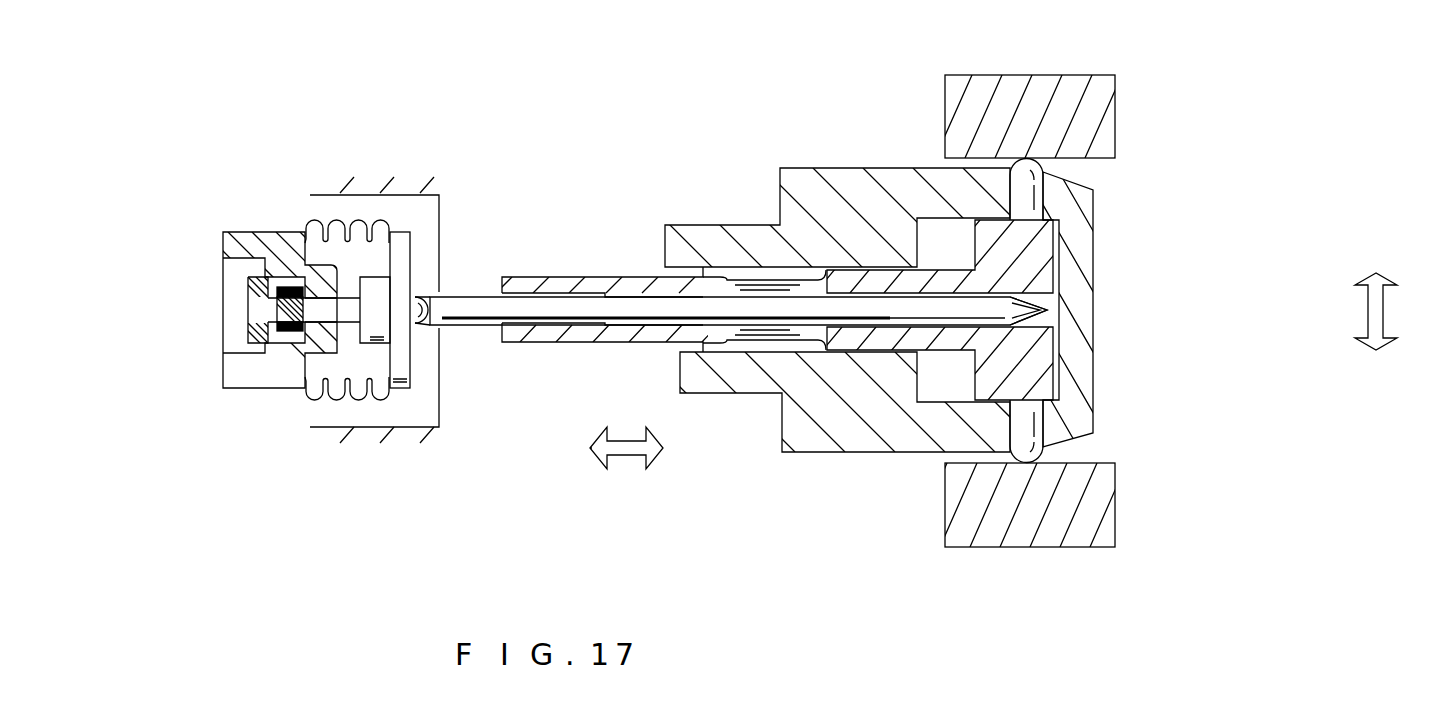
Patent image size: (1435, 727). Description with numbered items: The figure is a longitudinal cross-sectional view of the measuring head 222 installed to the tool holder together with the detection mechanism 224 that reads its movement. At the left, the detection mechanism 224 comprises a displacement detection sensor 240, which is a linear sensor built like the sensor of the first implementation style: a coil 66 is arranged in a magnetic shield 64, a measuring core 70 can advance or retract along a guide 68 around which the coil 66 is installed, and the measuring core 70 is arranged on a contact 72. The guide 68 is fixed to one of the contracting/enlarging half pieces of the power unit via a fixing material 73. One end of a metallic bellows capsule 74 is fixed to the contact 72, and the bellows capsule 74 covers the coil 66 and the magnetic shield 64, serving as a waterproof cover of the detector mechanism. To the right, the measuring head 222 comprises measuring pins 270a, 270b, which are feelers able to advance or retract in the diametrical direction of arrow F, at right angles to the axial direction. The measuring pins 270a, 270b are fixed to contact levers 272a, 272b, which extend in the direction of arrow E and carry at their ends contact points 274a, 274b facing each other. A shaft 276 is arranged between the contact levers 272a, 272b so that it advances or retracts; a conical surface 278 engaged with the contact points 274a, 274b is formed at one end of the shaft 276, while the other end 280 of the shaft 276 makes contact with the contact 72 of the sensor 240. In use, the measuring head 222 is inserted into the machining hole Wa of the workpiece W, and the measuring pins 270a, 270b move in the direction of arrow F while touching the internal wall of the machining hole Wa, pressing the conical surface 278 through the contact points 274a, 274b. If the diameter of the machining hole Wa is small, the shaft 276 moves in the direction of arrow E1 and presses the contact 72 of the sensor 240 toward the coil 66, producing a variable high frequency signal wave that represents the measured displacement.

The detection mechanism 224 is at (348, 163).
The measuring head 222 is at (862, 108).
The magnetic shield 64 is at (258, 352).
The coil 66 is at (262, 327).
The guide 68 is at (255, 289).
The measuring core 70 is at (257, 305).
The contact 72 is at (423, 288).
The fixing material 73 is at (258, 240).
The bellows capsule 74 is at (313, 428).
The displacement detection sensor 240 is at (426, 222).
The other end of the shaft 280 is at (423, 328).
The shaft 276 is at (570, 307).
The contact lever 272a is at (990, 247).
The contact lever 272b is at (990, 373).
The contact point 274a is at (1057, 272).
The contact point 274b is at (1000, 372).
The measuring pin 270a is at (1045, 200).
The measuring pin 270b is at (1045, 412).
The conical surface 278 is at (1050, 312).
The workpiece W is at (983, 92).
The machining hole Wa is at (1090, 458).
The direction of arrow E is at (626, 429).
The direction of arrow E1 is at (582, 470).
The direction of arrow F is at (1388, 311).